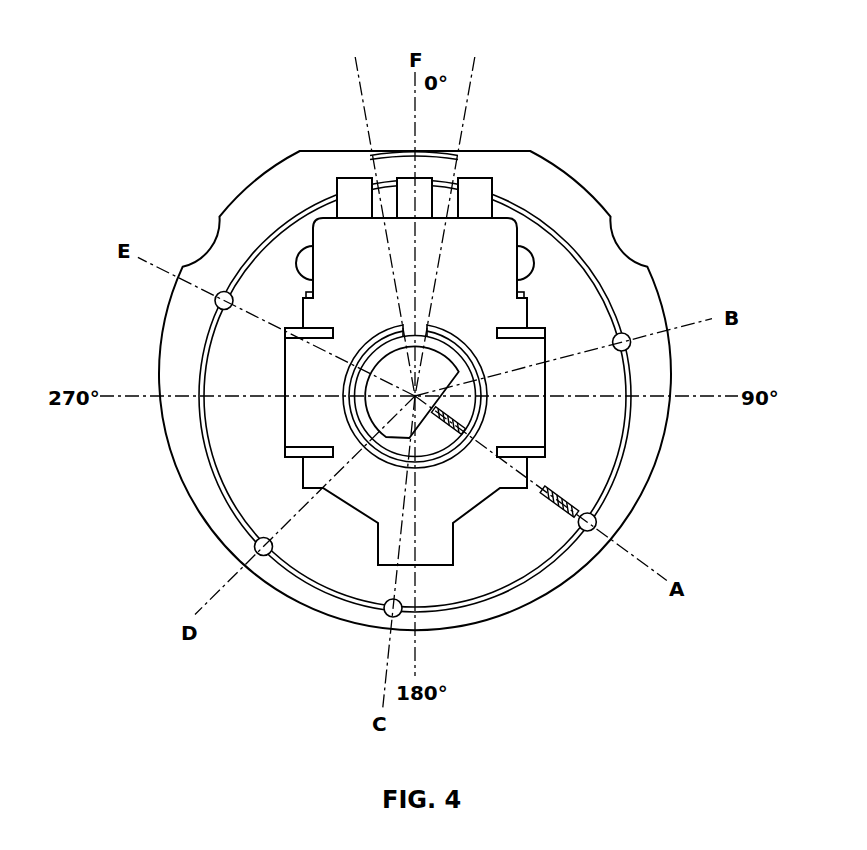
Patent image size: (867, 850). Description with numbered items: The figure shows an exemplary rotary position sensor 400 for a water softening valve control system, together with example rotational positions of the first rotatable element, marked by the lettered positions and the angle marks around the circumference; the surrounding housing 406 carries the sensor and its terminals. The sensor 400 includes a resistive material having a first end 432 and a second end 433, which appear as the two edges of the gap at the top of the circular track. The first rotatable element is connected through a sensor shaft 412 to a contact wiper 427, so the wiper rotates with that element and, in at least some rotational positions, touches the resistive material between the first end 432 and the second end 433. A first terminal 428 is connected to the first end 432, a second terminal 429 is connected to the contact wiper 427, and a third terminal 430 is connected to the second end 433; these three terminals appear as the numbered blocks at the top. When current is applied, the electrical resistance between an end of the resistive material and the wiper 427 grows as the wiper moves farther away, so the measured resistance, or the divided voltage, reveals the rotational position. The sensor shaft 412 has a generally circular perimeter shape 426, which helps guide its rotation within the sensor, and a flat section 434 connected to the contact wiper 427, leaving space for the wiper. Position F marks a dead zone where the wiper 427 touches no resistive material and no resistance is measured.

The sensor 400 is at (155, 36).
The housing 406 is at (572, 282).
The sensor shaft 412 is at (383, 404).
The generally circular perimeter shape 426 is at (385, 440).
The contact wiper 427 is at (465, 420).
The first terminal 428 is at (474, 198).
The second terminal 429 is at (410, 190).
The third terminal 430 is at (353, 198).
The first end 432 is at (428, 326).
The second end 433 is at (402, 326).
The flat section 434 is at (452, 437).